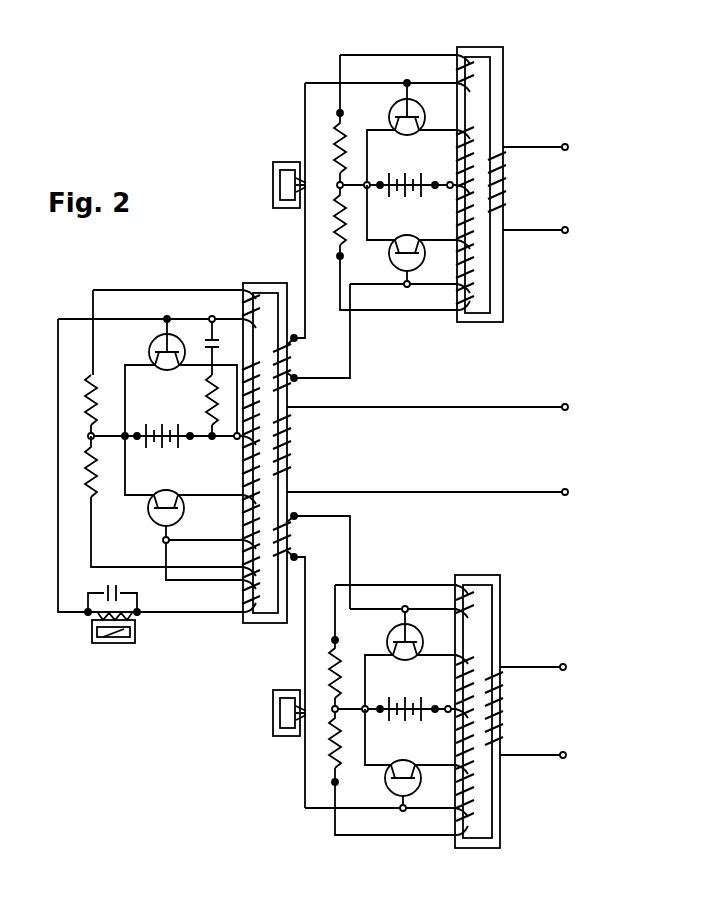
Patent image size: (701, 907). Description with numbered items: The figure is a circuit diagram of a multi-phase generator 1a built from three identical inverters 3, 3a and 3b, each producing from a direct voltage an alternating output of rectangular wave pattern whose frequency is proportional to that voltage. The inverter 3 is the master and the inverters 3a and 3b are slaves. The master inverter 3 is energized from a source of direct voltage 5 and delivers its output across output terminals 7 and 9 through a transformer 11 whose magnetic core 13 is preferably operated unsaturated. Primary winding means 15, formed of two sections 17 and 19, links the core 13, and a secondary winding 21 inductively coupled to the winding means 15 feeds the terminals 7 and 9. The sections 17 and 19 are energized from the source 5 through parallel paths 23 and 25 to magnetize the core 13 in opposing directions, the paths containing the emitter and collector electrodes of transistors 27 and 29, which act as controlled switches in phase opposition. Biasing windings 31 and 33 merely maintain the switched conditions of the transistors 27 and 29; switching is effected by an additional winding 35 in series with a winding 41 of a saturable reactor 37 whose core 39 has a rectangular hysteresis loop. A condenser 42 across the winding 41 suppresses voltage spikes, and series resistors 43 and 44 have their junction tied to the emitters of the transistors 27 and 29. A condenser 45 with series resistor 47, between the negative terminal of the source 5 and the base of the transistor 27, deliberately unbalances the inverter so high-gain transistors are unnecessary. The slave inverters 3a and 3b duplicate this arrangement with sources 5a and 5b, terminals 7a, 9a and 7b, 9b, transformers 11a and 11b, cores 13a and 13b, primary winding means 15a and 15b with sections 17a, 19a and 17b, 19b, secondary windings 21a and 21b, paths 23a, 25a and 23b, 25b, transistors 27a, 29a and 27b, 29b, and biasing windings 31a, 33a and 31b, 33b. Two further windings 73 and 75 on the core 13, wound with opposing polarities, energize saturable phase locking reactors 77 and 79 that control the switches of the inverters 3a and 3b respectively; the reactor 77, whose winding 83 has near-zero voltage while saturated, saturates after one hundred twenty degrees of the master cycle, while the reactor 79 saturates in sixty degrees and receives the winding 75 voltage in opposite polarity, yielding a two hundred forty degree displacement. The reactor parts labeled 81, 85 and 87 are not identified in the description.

The multi-phase generator 1a is at (176, 235).
The master inverter 3 is at (41, 447).
The slave inverter 3a is at (406, 40).
The slave inverter 3b is at (406, 574).
The source of direct voltage 5 is at (168, 426).
The source of direct voltage 5a is at (400, 190).
The source of direct voltage 5b is at (396, 710).
The output terminal 7 is at (568, 407).
The output terminal 7a is at (568, 147).
The output terminal 7b is at (566, 667).
The output terminal 9 is at (568, 491).
The output terminal 9a is at (568, 231).
The output terminal 9b is at (566, 755).
The transformer 11 is at (262, 272).
The transformer 11a is at (486, 36).
The transformer 11b is at (478, 564).
The magnetic core 13 is at (252, 623).
The magnetic core 13a is at (470, 322).
The magnetic core 13b is at (470, 848).
The primary winding means 15 is at (275, 400).
The primary winding means 15a is at (462, 169).
The primary winding means 15b is at (462, 695).
The winding section 17 is at (254, 373).
The winding section 17a is at (465, 136).
The winding section 17b is at (467, 662).
The winding section 19 is at (243, 490).
The winding section 19a is at (458, 231).
The winding section 19b is at (457, 757).
The secondary winding 21 is at (292, 432).
The secondary winding 21a is at (508, 180).
The secondary winding 21b is at (504, 703).
The parallel path 23 is at (156, 399).
The parallel path 23a is at (398, 156).
The parallel path 23b is at (396, 684).
The parallel path 25 is at (156, 481).
The parallel path 25a is at (398, 234).
The parallel path 25b is at (396, 756).
The transistor 27 is at (153, 339).
The transistor 27a is at (397, 108).
The transistor 27b is at (391, 633).
The transistor 29 is at (150, 510).
The transistor 29a is at (390, 256).
The transistor 29b is at (378, 799).
The biasing winding 31 is at (242, 302).
The biasing winding 31a is at (438, 81).
The biasing winding 31b is at (438, 611).
The biasing winding 33 is at (241, 554).
The biasing winding 33a is at (446, 300).
The biasing winding 33b is at (456, 821).
The additional winding 35 is at (241, 595).
The saturable reactor 37 is at (79, 645).
The saturable magnetic core 39 is at (136, 632).
The winding 41 is at (122, 643).
The condenser 42 is at (108, 588).
The resistor 43 is at (91, 382).
The resistor 44 is at (91, 498).
The condenser 45 is at (214, 347).
The resistor 47 is at (209, 395).
The winding 73 is at (290, 356).
The winding 75 is at (290, 546).
The saturable phase locking reactor 77 is at (264, 185).
The saturable phase locking reactor 79 is at (264, 756).
The potentiometer resistance element 81 is at (286, 162).
The winding 83 is at (306, 185).
The potentiometer resistance element 85 is at (285, 700).
The potentiometer wiper 87 is at (310, 710).